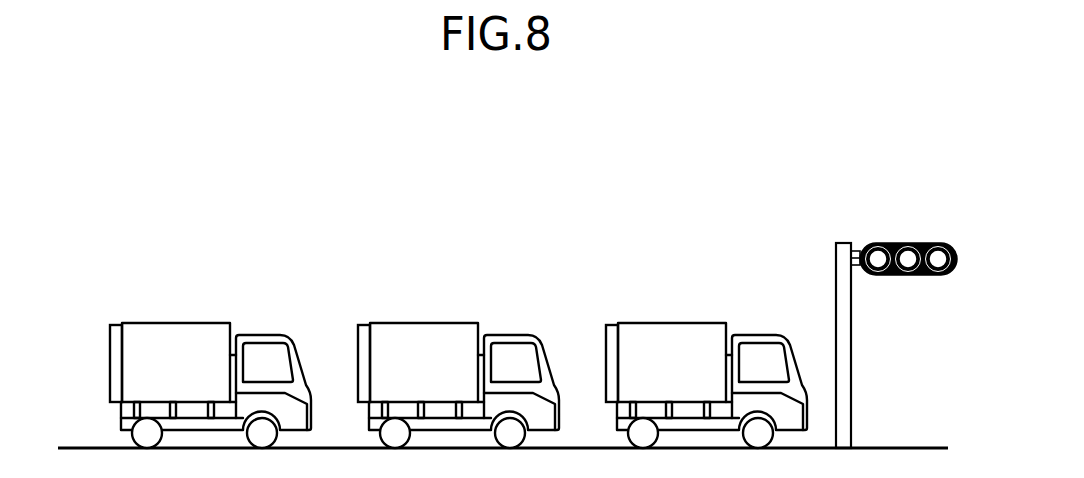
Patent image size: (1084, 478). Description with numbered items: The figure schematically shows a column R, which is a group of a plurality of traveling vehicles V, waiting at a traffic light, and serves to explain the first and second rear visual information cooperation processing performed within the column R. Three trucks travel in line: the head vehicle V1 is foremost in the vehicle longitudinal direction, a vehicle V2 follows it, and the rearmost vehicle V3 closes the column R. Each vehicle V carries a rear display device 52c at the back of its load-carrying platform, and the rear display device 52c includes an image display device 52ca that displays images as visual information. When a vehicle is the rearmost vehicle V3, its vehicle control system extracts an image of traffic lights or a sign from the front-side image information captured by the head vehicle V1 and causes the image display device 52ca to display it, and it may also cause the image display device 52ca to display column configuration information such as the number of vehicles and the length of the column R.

The column R is at (327, 217).
The vehicle V is at (425, 350).
The head vehicle V1 is at (676, 318).
The vehicle V2 is at (428, 318).
The rearmost vehicle V3 is at (180, 318).
The rear display device 52c is at (347, 337).
The image display device 52ca is at (118, 323).